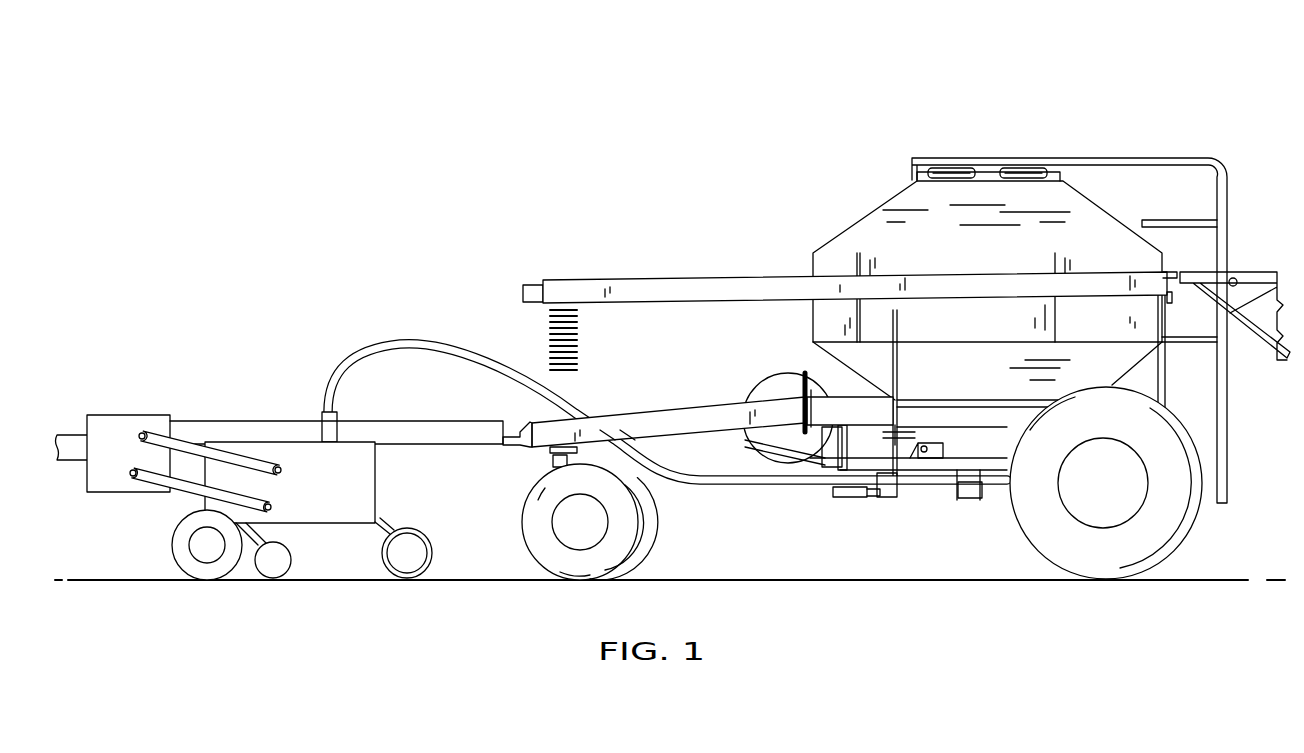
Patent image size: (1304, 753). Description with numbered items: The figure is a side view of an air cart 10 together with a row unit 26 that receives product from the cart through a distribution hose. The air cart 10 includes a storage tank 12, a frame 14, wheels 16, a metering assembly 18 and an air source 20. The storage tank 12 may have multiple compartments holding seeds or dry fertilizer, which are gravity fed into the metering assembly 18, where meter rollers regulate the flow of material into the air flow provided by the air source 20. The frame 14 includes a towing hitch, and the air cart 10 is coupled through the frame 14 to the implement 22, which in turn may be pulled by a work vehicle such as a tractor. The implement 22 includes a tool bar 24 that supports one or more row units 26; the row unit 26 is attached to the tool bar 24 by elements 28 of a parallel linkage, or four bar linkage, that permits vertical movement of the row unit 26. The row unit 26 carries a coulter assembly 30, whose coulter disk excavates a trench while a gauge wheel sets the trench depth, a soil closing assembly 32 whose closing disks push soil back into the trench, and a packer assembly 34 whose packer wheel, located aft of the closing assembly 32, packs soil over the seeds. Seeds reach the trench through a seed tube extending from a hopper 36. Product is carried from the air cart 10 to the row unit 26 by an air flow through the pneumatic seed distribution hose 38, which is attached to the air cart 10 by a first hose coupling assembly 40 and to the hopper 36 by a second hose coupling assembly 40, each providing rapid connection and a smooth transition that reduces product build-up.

The air cart 10 is at (877, 131).
The storage tank 12 is at (896, 201).
The frame 14 is at (663, 412).
The wheels 16 is at (532, 553).
The metering assembly 18 is at (938, 482).
The air source 20 is at (748, 382).
The implement 22 is at (82, 386).
The tool bar 24 is at (128, 415).
The row unit 26 is at (138, 513).
The elements of a parallel linkage assembly 28 is at (190, 445).
The coulter assembly 30 is at (168, 532).
The soil closing assembly 32 is at (293, 553).
The packer assembly 34 is at (423, 532).
The hopper 36 is at (377, 477).
The pneumatic seed distribution hose 38 is at (407, 342).
The hose coupling assembly 40 is at (318, 415).